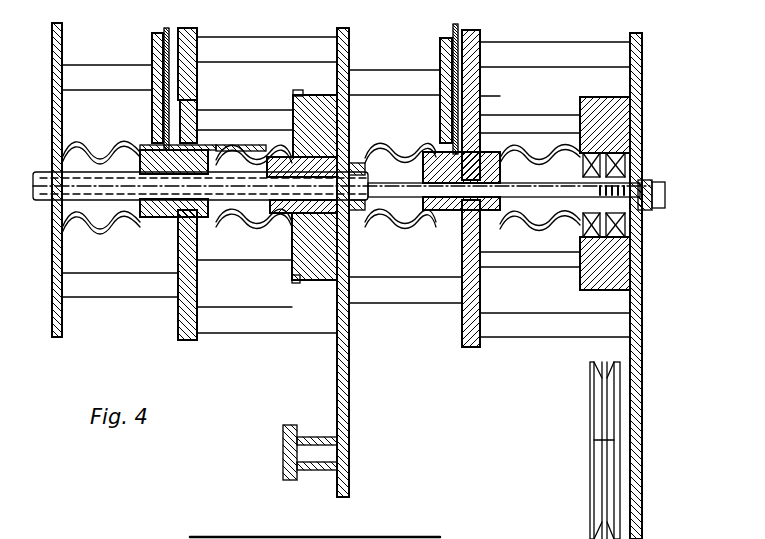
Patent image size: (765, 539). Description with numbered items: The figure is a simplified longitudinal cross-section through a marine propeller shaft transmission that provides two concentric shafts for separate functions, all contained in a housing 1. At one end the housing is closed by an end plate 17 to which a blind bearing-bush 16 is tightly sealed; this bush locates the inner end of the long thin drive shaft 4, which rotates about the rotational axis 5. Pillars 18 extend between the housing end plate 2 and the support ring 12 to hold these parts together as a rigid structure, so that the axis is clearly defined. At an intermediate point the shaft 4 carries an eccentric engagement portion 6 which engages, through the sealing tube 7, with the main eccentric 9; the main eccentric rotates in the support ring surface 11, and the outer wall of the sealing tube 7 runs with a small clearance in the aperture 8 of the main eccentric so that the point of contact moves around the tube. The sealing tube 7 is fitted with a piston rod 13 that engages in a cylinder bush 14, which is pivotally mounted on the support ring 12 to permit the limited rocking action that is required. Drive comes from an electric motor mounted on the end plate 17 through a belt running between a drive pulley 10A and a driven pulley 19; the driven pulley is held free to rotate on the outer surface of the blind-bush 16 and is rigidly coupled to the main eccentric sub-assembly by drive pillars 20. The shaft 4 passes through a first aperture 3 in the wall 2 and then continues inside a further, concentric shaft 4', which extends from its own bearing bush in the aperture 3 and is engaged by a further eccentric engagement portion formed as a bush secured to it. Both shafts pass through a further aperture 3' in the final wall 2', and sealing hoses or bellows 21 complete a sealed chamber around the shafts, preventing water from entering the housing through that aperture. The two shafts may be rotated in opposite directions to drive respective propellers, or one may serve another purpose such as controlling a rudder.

The housing 1 is at (248, 418).
The housing end plate 2 is at (334, 262).
The final wall 2' is at (65, 197).
The aperture 3 is at (326, 170).
The further aperture 3' is at (101, 168).
The drive shaft 4 is at (128, 204).
The further shaft 4' is at (197, 201).
The rotational axis 5 is at (112, 200).
The eccentric engagement portion 6 is at (458, 170).
The sealing tube 7 is at (156, 143).
The aperture in the main eccentric 8 is at (504, 255).
The main eccentric 9 is at (175, 265).
The drive pulley 10A is at (602, 440).
The support ring surface 11 is at (488, 96).
The support ring 12 is at (482, 36).
The piston rod 13 is at (453, 26).
The cylinder bush 14 is at (440, 56).
The blind bearing-bush 16 is at (582, 170).
The end plate 17 is at (632, 470).
The pillars 18 is at (106, 74).
The driven pulley 19 is at (575, 360).
The drive pillars 20 is at (228, 118).
The sealing hoses or bellows 21 is at (106, 280).